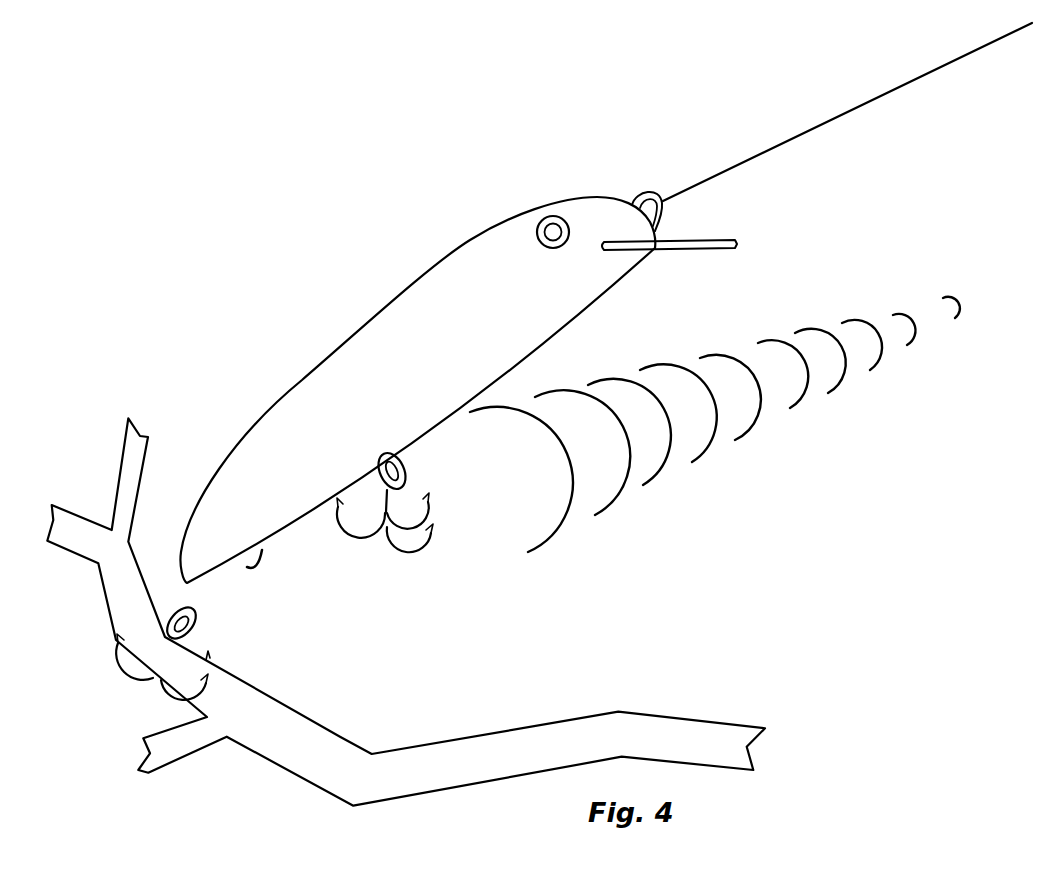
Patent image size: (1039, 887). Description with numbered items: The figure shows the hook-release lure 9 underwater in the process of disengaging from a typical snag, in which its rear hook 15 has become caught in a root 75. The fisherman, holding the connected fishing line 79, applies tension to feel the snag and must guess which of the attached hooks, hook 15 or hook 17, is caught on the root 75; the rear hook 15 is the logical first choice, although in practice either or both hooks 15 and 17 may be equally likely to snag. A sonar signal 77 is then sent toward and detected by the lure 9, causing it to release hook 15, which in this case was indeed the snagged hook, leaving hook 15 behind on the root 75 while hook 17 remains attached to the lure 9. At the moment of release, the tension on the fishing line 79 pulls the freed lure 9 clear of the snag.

The lure 9 is at (300, 270).
The fishing line 79 is at (833, 120).
The sonar signal 77 is at (718, 488).
The hook 17 is at (358, 538).
The rear hook 15 is at (222, 615).
The root 75 is at (703, 742).